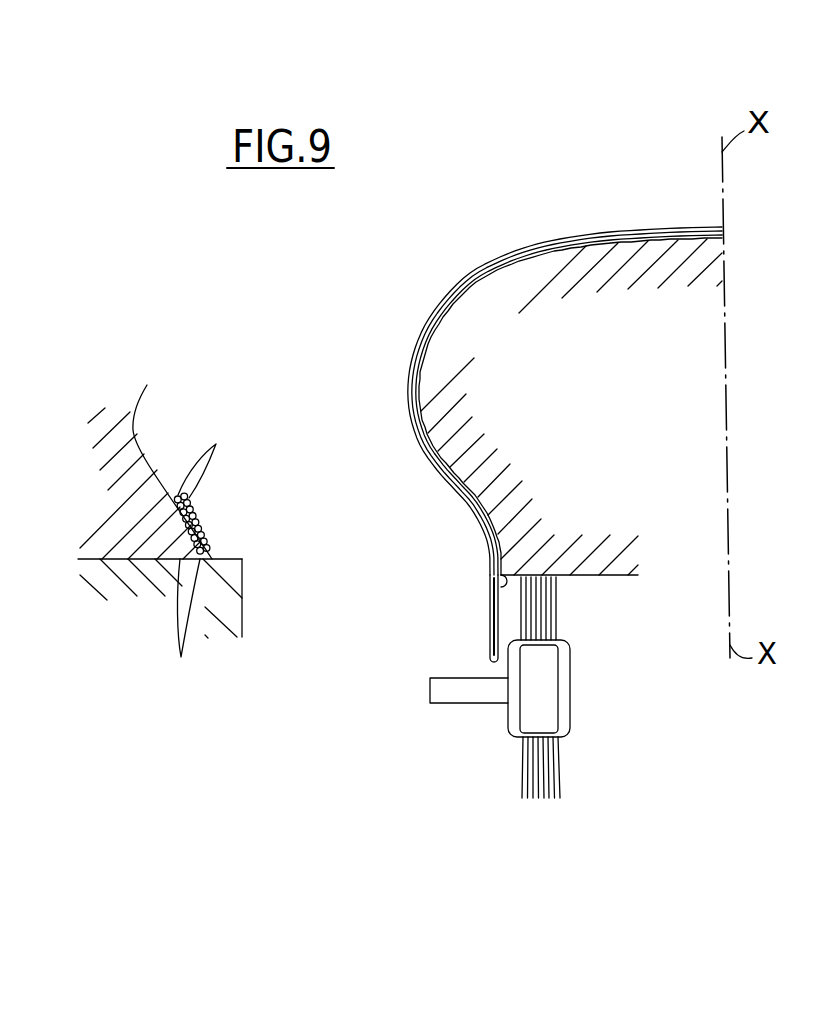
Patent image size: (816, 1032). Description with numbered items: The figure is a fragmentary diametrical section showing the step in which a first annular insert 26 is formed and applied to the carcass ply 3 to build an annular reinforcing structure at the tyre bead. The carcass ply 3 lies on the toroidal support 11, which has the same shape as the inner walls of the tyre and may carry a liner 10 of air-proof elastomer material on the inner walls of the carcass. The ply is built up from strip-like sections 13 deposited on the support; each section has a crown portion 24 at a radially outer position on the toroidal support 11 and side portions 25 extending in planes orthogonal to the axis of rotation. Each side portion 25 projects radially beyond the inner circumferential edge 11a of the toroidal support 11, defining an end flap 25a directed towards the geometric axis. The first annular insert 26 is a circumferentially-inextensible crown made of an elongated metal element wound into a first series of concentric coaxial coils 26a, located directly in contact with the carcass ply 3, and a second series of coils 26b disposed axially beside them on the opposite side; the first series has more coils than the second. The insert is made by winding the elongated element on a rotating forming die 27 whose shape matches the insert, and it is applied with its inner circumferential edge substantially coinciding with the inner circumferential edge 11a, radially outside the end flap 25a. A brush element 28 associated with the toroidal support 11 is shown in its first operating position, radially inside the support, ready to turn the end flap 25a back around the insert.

The carcass ply 3 is at (488, 252).
The liner 10 is at (723, 231).
The toroidal support 11 is at (607, 414).
The inner circumferential edge 11a is at (492, 592).
The strip-like section 13 is at (627, 236).
The crown portion 24 is at (574, 232).
The side portion 25 is at (417, 440).
The end flap 25a is at (490, 640).
The first annular insert 26 is at (208, 530).
The first series of concentric coaxial coils 26a is at (219, 457).
The second series of concentric coaxial coils 26b is at (185, 633).
The forming die 27 is at (156, 372).
The brush element 28 is at (556, 618).